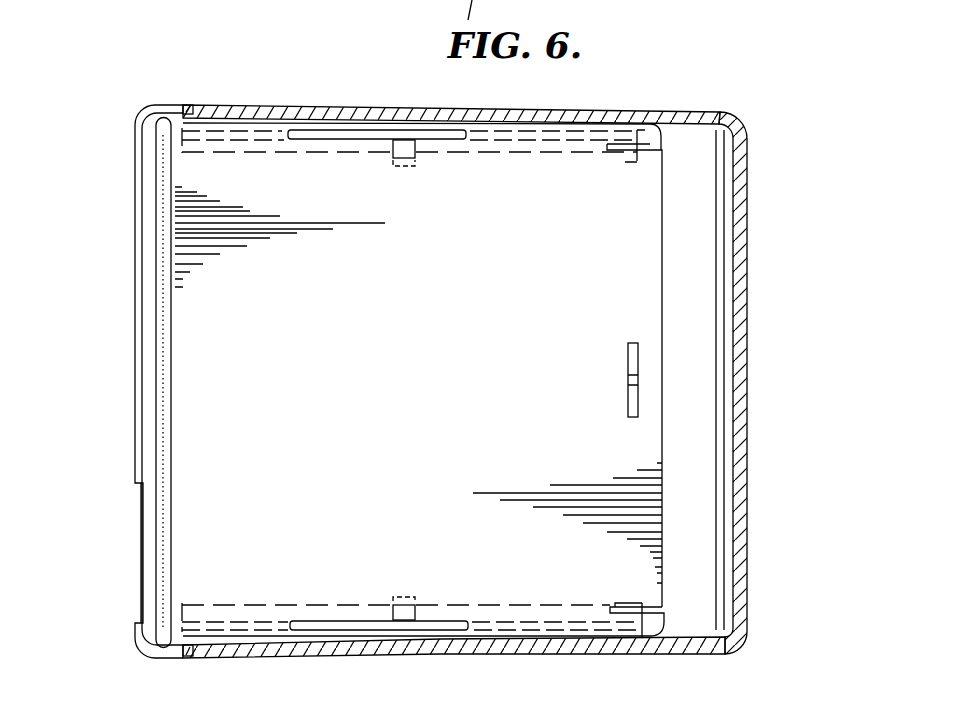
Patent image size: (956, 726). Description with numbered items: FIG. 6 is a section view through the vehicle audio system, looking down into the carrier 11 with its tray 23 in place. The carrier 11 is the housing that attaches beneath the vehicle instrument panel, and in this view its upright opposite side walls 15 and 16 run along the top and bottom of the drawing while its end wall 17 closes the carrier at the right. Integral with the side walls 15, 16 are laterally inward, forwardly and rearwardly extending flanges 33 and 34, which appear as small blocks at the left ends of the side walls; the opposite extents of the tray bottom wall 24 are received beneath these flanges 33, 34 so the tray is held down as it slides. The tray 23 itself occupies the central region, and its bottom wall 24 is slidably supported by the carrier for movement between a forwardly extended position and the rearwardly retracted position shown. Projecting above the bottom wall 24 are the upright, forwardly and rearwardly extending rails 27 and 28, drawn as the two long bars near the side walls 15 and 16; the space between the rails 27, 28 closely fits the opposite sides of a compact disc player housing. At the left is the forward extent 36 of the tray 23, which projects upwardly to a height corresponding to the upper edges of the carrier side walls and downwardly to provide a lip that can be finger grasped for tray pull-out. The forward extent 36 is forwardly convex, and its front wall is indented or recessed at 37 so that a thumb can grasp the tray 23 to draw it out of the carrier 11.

The carrier 11 is at (696, 106).
The side wall 15 is at (362, 643).
The side wall 16 is at (317, 104).
The end wall 17 is at (748, 455).
The tray 23 is at (656, 206).
The bottom wall 24 is at (418, 385).
The rail 27 is at (366, 130).
The rail 28 is at (458, 631).
The flange 33 is at (200, 104).
The flange 34 is at (206, 640).
The forward extent 36 is at (128, 333).
The recess 37 is at (143, 545).